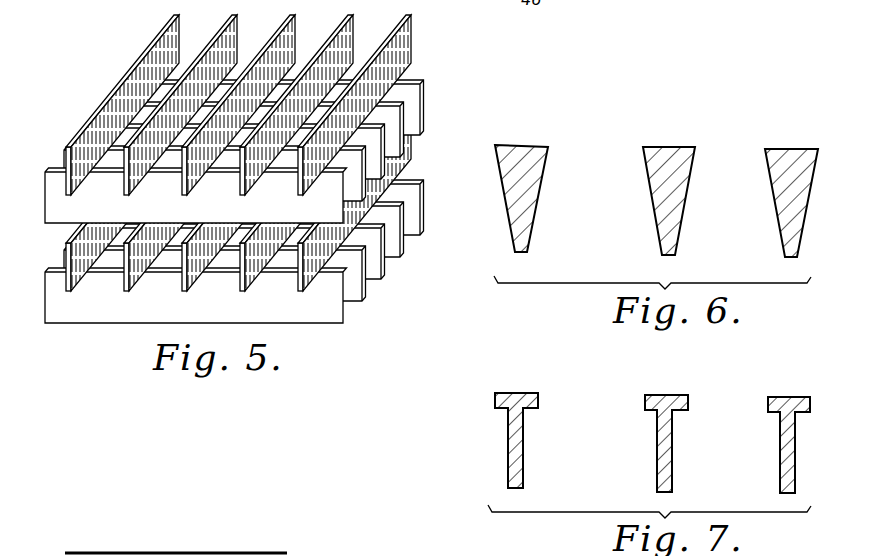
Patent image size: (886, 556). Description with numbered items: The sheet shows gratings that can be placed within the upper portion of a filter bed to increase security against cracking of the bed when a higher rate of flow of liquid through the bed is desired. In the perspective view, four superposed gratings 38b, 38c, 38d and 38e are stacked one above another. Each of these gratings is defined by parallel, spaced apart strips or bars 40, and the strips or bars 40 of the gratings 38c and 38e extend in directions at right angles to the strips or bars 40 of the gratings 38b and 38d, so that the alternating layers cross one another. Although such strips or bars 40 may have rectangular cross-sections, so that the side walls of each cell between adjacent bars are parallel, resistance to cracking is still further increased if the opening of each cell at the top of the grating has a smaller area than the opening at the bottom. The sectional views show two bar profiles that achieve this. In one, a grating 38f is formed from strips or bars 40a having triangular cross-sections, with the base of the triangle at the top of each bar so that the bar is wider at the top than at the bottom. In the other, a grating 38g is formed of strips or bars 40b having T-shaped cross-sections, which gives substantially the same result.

In FIG. 5, the grating 38b is at (460, 38).
In FIG. 5, the grating 38c is at (462, 102).
In FIG. 5, the grating 38d is at (62, 245).
In FIG. 5, the grating 38e is at (448, 258).
In FIG. 5, the strips or bars 40 is at (247, 162).
In FIG. 6, the grating 38f is at (656, 196).
In FIG. 6, the strips or bars 40a is at (647, 162).
In FIG. 7, the grating 38g is at (649, 439).
In FIG. 7, the strips or bars 40b is at (645, 395).